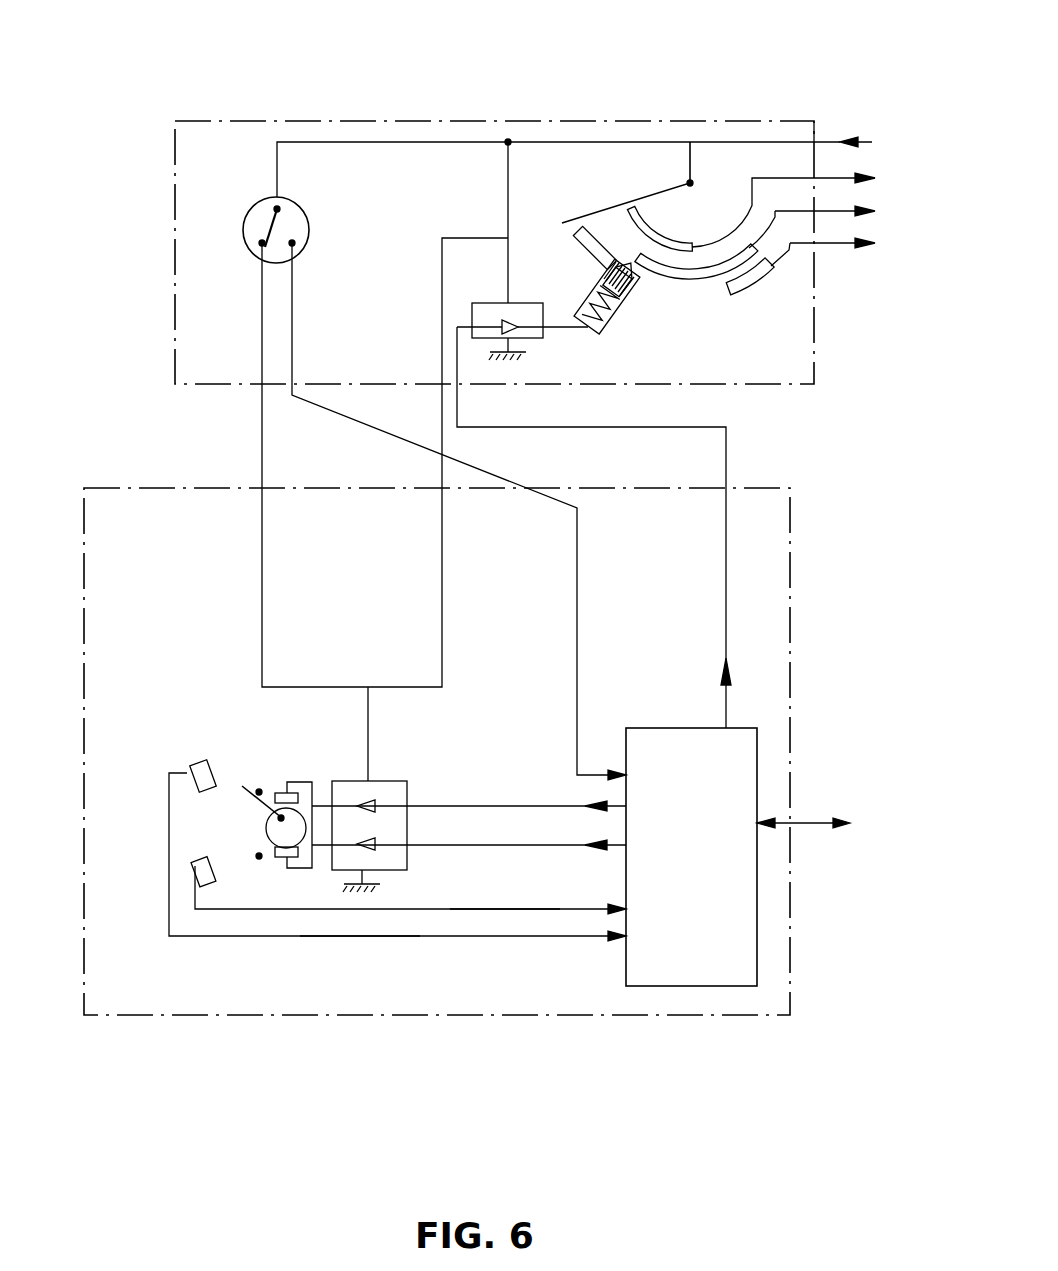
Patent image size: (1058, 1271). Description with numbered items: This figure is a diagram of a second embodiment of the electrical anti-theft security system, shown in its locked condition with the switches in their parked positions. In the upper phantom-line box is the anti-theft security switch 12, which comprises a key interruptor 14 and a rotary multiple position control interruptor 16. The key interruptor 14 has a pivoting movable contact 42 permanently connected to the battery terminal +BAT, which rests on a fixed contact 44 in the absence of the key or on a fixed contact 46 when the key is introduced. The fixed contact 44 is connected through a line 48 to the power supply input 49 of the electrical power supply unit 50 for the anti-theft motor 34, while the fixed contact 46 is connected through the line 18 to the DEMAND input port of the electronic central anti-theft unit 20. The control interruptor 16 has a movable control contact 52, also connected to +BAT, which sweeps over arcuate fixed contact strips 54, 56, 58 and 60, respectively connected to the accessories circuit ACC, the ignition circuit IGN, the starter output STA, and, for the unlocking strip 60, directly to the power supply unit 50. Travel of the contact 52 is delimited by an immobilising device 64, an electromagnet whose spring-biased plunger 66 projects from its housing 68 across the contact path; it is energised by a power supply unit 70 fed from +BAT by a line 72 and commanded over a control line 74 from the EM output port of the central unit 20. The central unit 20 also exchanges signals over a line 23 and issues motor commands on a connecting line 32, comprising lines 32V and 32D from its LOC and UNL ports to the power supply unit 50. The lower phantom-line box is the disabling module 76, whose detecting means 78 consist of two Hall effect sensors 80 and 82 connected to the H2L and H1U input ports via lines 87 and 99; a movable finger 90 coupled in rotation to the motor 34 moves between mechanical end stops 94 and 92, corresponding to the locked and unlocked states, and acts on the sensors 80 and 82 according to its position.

The anti-theft security switch 12 is at (197, 112).
The key interruptor 14 is at (240, 203).
The multiple position control interruptor 16 is at (795, 274).
The line 18 is at (352, 420).
The electronic central anti-theft unit 20 is at (757, 930).
The line 23 is at (800, 823).
The connecting line 32 is at (469, 794).
The locking command line 32V is at (440, 806).
The unlocking command line 32D is at (480, 848).
The anti-theft motor 34 is at (302, 823).
The pivoting movable contact 42 is at (273, 224).
The fixed contact 44 is at (254, 245).
The fixed contact 46 is at (300, 246).
The line 48 is at (262, 447).
The power supply input 49 is at (368, 687).
The electrical power supply unit 50 is at (400, 890).
The movable control contact 52 is at (562, 214).
The contact strip 54 is at (662, 209).
The contact strip 56 is at (717, 243).
The contact strip 58 is at (740, 288).
The arcuate contact strip 60 is at (612, 232).
The immobilising device 64 is at (620, 338).
The plunger 66 is at (635, 277).
The housing 68 is at (593, 334).
The power supply unit 70 is at (483, 287).
The line 72 is at (507, 172).
The control line 74 is at (728, 442).
The disabling module 76 is at (118, 479).
The detecting means 78 is at (80, 836).
The Hall effect sensor 80 is at (192, 863).
The Hall effect sensor 82 is at (208, 762).
The line 87 is at (490, 911).
The movable finger 90 is at (247, 793).
The mechanical end stop element 92 is at (259, 857).
The mechanical end stop element 94 is at (260, 790).
The line 99 is at (340, 937).